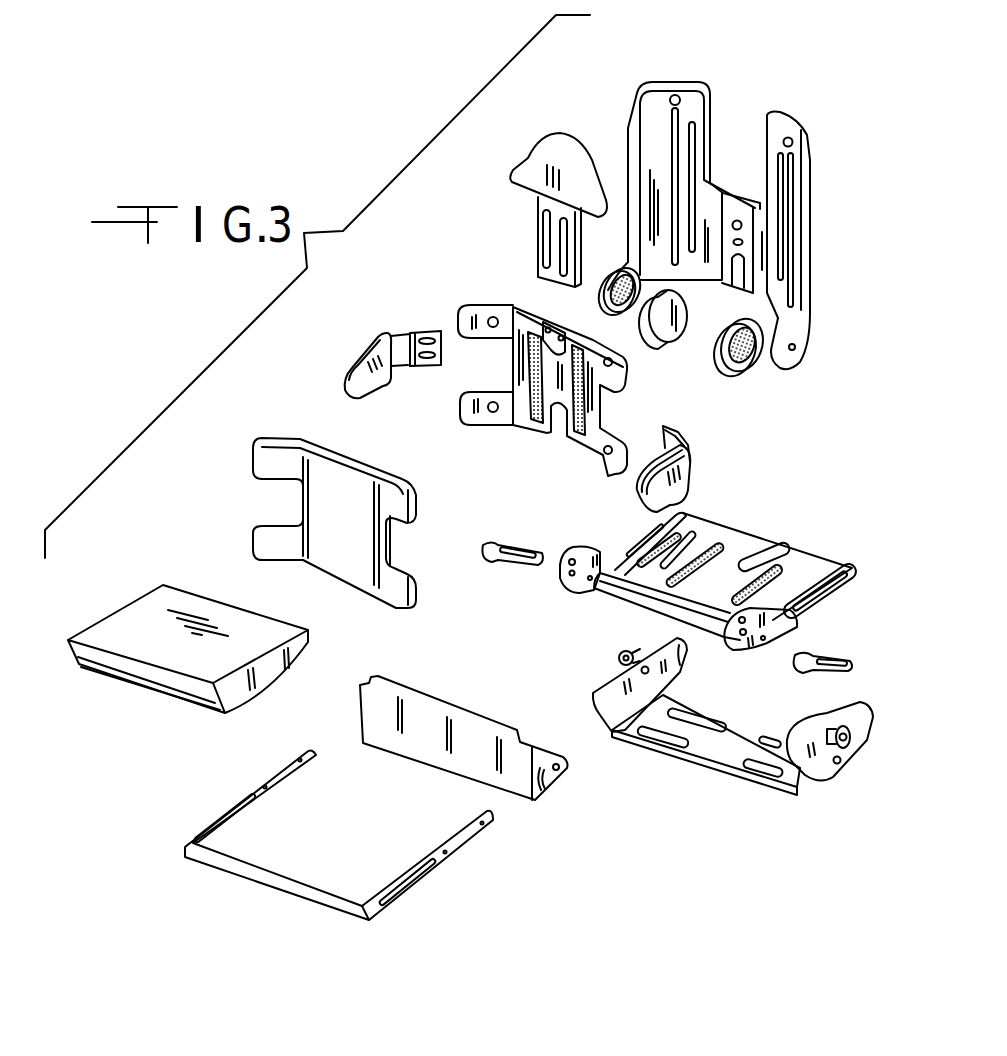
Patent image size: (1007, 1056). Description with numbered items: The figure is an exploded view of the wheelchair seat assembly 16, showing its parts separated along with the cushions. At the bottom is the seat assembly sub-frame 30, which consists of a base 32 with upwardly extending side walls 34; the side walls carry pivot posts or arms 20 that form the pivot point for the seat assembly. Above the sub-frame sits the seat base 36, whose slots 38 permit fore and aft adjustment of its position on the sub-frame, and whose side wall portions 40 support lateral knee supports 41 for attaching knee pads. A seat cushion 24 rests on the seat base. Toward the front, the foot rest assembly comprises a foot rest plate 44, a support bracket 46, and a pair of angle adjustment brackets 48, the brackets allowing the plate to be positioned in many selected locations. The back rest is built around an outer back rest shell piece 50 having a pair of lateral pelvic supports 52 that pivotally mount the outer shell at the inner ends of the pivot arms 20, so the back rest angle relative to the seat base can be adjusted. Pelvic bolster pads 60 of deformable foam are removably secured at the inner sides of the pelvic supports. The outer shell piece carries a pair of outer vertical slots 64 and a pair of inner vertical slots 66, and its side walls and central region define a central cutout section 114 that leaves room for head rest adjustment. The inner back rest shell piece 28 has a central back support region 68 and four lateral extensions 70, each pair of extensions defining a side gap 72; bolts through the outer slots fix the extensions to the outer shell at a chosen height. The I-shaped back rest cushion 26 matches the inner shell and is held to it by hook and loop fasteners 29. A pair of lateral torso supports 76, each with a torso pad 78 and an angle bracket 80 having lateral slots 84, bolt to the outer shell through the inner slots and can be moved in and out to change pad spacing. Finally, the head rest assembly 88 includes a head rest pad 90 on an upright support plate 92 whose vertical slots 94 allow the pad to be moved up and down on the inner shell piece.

The wheelchair seat assembly 16 is at (624, 845).
The pivot posts or arms 20 is at (618, 652).
The seat cushion 24 is at (175, 595).
The back rest cushion 26 is at (257, 503).
The inner back rest shell piece 28 is at (493, 283).
The hook and loop fasteners 29 is at (568, 327).
The seat assembly sub-frame 30 is at (805, 805).
The base 32 is at (710, 750).
The side walls 34 is at (596, 698).
The seat base 36 is at (752, 550).
The slots 38 is at (733, 550).
The side wall portions 40 is at (590, 540).
The lateral knee supports 41 is at (563, 593).
The foot rest plate 44 is at (425, 707).
The support bracket 46 is at (243, 793).
The angle adjustment brackets 48 is at (490, 562).
The outer back rest shell piece 50 is at (628, 118).
The lateral pelvic supports 52 is at (595, 300).
The pelvic bolster pads 60 is at (703, 335).
The outer vertical slots 64 is at (668, 95).
The inner vertical slots 66 is at (712, 105).
The central back support region 68 is at (533, 430).
The lateral extensions 70 is at (465, 305).
The side gap 72 is at (508, 378).
The lateral torso supports 76 is at (347, 365).
The torso pads 78 is at (367, 395).
The angle brackets 80 is at (427, 367).
The lateral slots 84 is at (427, 336).
The head rest assembly 88 is at (573, 133).
The head rest pad 90 is at (523, 177).
The upright support plate 92 is at (540, 270).
The vertical slots 94 is at (545, 230).
The central cutout section 114 is at (735, 112).